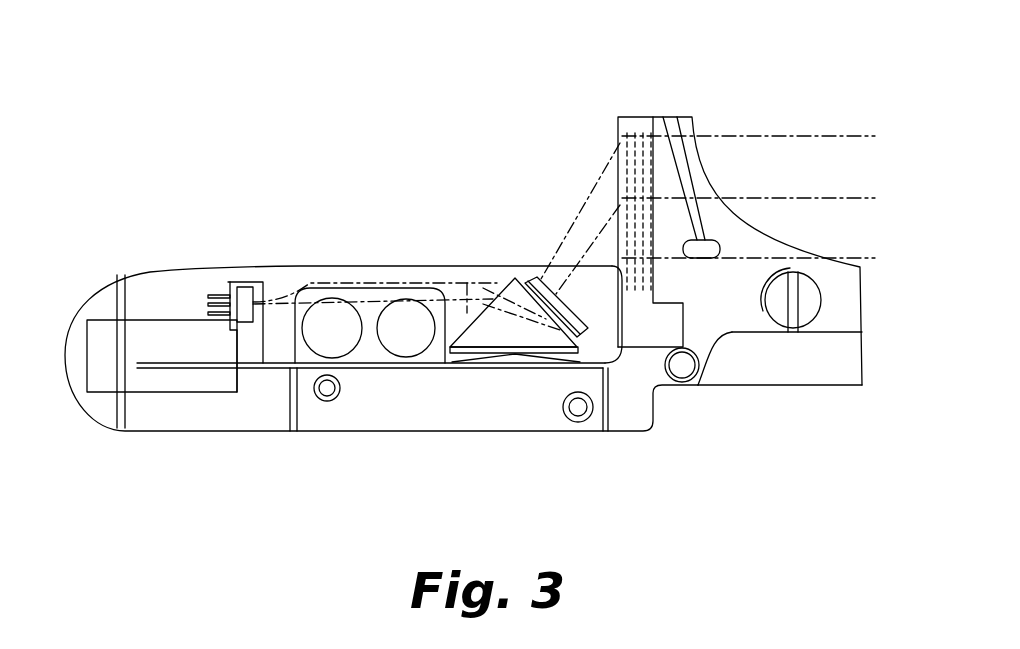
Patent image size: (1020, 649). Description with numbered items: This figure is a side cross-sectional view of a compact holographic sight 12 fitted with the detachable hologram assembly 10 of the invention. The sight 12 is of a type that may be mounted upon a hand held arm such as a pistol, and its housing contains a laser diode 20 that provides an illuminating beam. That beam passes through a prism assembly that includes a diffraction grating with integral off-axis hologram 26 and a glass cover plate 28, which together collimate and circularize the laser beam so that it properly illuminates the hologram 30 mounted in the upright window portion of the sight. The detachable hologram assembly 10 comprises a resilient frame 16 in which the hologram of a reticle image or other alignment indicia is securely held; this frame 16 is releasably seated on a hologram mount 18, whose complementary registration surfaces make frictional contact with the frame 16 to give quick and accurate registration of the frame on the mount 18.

The detachable hologram assembly 10 is at (747, 125).
The compact holographic sight 12 is at (308, 239).
The resilient frame 16 is at (620, 142).
The hologram mount 18 is at (752, 303).
The laser diode 20 is at (250, 287).
The diffraction grating with integral off-axis hologram 26 is at (525, 287).
The glass cover plate 28 is at (542, 287).
The hologram 30 is at (638, 127).